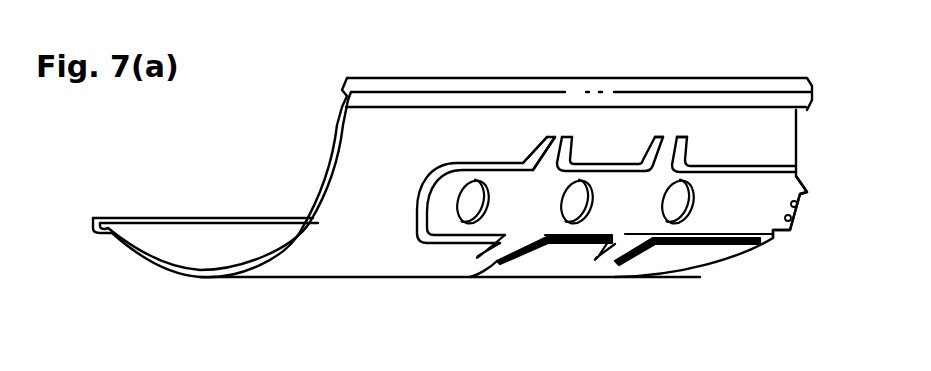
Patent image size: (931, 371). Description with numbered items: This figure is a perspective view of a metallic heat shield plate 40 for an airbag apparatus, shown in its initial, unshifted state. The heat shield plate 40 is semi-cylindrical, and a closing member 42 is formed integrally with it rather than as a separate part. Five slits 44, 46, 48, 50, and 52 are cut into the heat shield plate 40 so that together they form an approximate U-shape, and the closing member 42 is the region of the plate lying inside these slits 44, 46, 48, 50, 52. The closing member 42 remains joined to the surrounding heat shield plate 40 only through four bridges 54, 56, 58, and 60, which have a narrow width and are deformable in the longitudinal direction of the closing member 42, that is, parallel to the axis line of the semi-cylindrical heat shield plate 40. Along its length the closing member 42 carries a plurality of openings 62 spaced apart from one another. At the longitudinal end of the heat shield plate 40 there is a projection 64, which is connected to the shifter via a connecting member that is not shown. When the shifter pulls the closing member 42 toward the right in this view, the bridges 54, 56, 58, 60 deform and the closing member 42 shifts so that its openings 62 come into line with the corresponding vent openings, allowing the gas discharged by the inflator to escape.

The heat shield plate 40 is at (397, 128).
The closing member 42 is at (747, 220).
The slit 44 is at (733, 165).
The slit 46 is at (608, 165).
The slit 48 is at (417, 200).
The slit 50 is at (558, 245).
The slit 52 is at (680, 248).
The bridge 54 is at (666, 148).
The bridge 56 is at (552, 146).
The bridge 58 is at (492, 257).
The bridge 60 is at (610, 254).
The opening 62 is at (480, 199).
The projection 64 is at (802, 207).